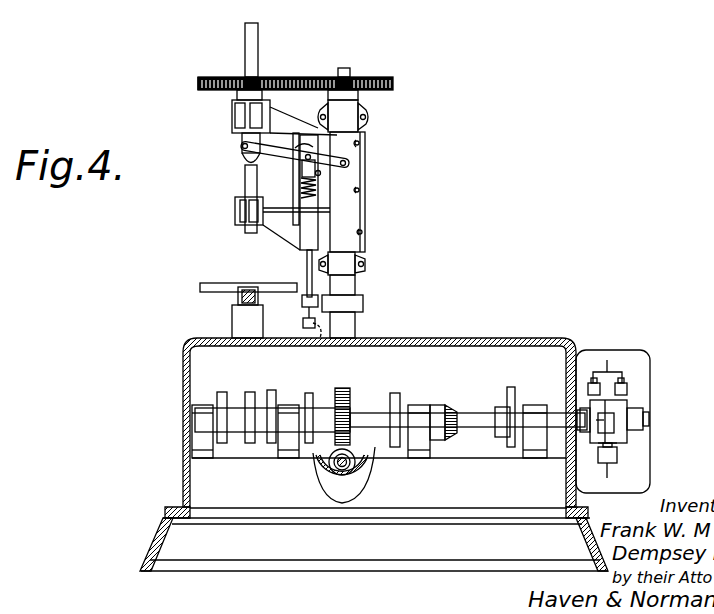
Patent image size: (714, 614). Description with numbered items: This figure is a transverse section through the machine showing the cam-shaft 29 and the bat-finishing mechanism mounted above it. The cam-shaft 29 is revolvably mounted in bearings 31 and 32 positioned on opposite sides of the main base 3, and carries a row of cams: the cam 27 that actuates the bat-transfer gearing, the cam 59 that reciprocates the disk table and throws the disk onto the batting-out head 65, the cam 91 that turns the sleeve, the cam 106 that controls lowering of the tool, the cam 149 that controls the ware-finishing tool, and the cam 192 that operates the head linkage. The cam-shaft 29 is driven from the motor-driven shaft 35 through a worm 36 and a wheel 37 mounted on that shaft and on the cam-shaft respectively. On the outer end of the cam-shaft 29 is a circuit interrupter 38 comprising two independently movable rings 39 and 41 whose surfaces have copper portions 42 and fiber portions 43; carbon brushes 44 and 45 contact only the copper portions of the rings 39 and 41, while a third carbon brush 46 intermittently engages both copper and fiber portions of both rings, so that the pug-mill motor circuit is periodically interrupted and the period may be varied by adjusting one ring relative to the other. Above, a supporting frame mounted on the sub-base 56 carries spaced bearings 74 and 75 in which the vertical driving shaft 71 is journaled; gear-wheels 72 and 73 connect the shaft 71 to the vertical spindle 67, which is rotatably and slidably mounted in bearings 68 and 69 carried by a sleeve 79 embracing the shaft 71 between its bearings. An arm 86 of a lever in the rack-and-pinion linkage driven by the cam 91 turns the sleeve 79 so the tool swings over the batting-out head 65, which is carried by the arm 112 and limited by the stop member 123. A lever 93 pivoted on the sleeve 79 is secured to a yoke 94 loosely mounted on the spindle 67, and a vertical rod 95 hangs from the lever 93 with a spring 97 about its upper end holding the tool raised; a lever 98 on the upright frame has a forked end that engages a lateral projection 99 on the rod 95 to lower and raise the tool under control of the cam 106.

The main base 3 is at (164, 520).
The cam 27 is at (226, 391).
The cam-shaft 29 is at (368, 414).
The bearing 31 is at (205, 404).
The bearing 32 is at (418, 405).
The shaft 35 is at (322, 481).
The worm 36 is at (363, 467).
The wheel 37 is at (342, 392).
The circuit interrupter 38 is at (649, 418).
The ring 39 is at (578, 426).
The ring 41 is at (628, 400).
The copper surface portion 42 is at (603, 421).
The fiber surface portion 43 is at (608, 436).
The carbon brush 44 is at (590, 384).
The carbon brush 45 is at (628, 384).
The carbon brush 46 is at (617, 456).
The sub-base 56 is at (440, 344).
The cam 59 is at (250, 444).
The batting-out head 65 is at (223, 284).
The spindle 67 is at (258, 30).
The bearing 68 is at (232, 113).
The bearing 69 is at (235, 210).
The driving shaft 71 is at (349, 70).
The gear-wheel 72 is at (393, 83).
The gear-wheel 73 is at (206, 78).
The bearing 74 is at (345, 117).
The bearing 75 is at (347, 263).
The sleeve 79 is at (365, 162).
The arm 86 is at (350, 305).
The cam 91 is at (270, 391).
The lever 93 is at (299, 160).
The yoke 94 is at (241, 147).
The rod 95 is at (319, 175).
The spring 97 is at (300, 188).
The lever 98 is at (303, 320).
The lateral projection 99 is at (318, 340).
The cam 106 is at (312, 388).
The arm 112 is at (253, 288).
The stop member 123 is at (232, 306).
The cam 149 is at (509, 388).
The cam 192 is at (395, 393).